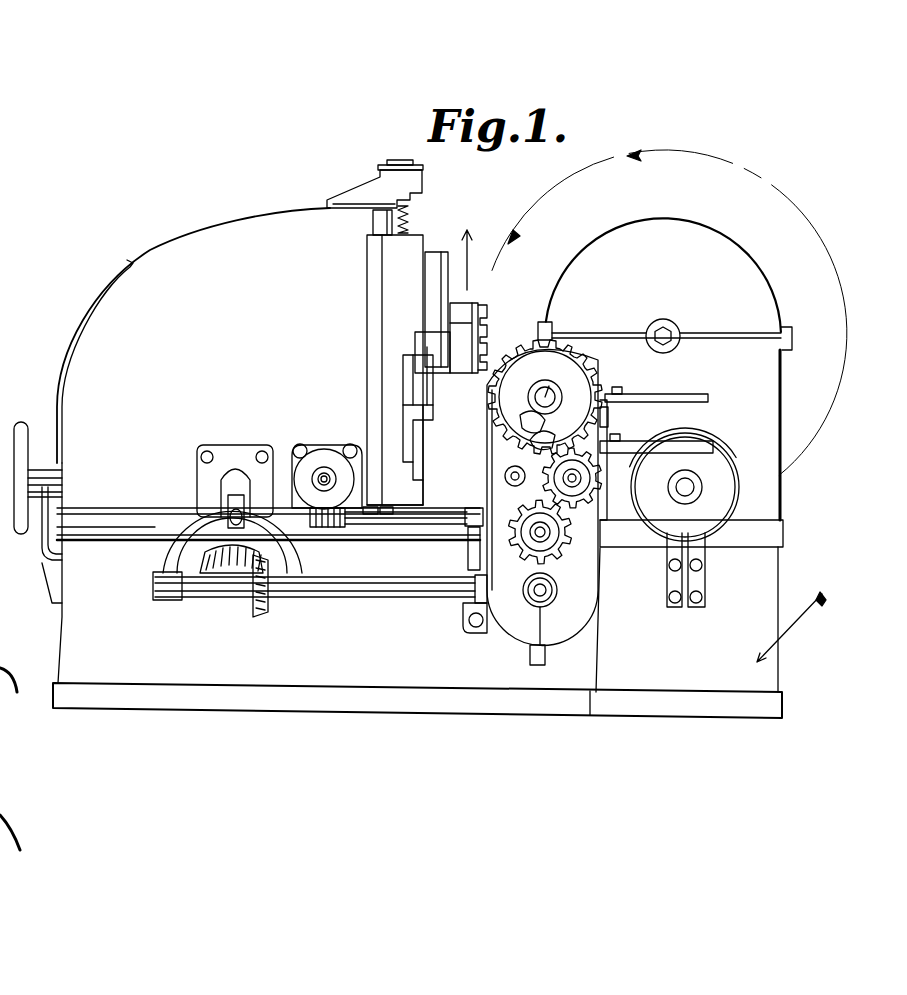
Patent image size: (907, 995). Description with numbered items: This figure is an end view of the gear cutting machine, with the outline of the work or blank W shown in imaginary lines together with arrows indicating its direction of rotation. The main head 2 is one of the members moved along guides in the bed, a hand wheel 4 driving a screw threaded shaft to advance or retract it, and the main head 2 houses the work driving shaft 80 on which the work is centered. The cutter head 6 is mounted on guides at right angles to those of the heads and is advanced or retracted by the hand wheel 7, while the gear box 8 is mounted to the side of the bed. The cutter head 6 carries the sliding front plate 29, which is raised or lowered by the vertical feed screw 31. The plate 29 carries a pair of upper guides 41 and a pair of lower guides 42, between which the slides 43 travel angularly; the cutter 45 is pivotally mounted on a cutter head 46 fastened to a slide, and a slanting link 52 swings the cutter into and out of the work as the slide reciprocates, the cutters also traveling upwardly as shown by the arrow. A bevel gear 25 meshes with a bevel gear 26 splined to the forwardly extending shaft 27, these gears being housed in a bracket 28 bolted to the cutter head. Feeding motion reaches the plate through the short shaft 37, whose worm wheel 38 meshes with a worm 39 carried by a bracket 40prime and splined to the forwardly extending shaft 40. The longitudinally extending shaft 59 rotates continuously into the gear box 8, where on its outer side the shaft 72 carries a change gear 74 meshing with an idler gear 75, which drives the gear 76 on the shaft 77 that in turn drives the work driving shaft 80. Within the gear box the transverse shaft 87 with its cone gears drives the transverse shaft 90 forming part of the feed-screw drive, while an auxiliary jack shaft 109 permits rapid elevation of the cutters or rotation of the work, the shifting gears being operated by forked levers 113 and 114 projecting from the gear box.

The main head 2 is at (773, 266).
The hand wheel 4 is at (750, 494).
The cutter head 6 is at (210, 205).
The hand wheel 7 is at (26, 428).
The gear box 8 is at (580, 606).
The bevel gear 25 is at (205, 553).
The bevel gear 26 is at (257, 618).
The forwardly extending shaft 27 is at (388, 596).
The bracket 28 is at (168, 558).
The sliding front plate 29 is at (431, 241).
The vertical feed screw 31 is at (414, 230).
The short shaft 37 is at (320, 479).
The worm wheel 38 is at (334, 444).
The worm 39 is at (326, 520).
The forwardly extending shaft 40 is at (443, 528).
The bracket 40prime is at (313, 439).
The upper guides 41 is at (436, 344).
The lower guides 42 is at (425, 462).
The slides 43 is at (405, 385).
The cutter 45 is at (488, 328).
The cutter heads 46 is at (408, 371).
The link 52 is at (451, 322).
The longitudinally extending shaft 59 is at (533, 605).
The shaft 72 is at (538, 535).
The change gear 74 is at (582, 541).
The idler gear 75 is at (606, 448).
The gear 76 is at (569, 349).
The shaft 77 is at (553, 390).
The work driving shaft 80 is at (682, 322).
The transverse shaft 87 is at (535, 440).
The transverse shaft 90 is at (505, 480).
The auxiliary jack shaft 109 is at (520, 420).
The forked lever 113 is at (706, 450).
The forked lever 114 is at (696, 402).
The work or blank W is at (833, 412).